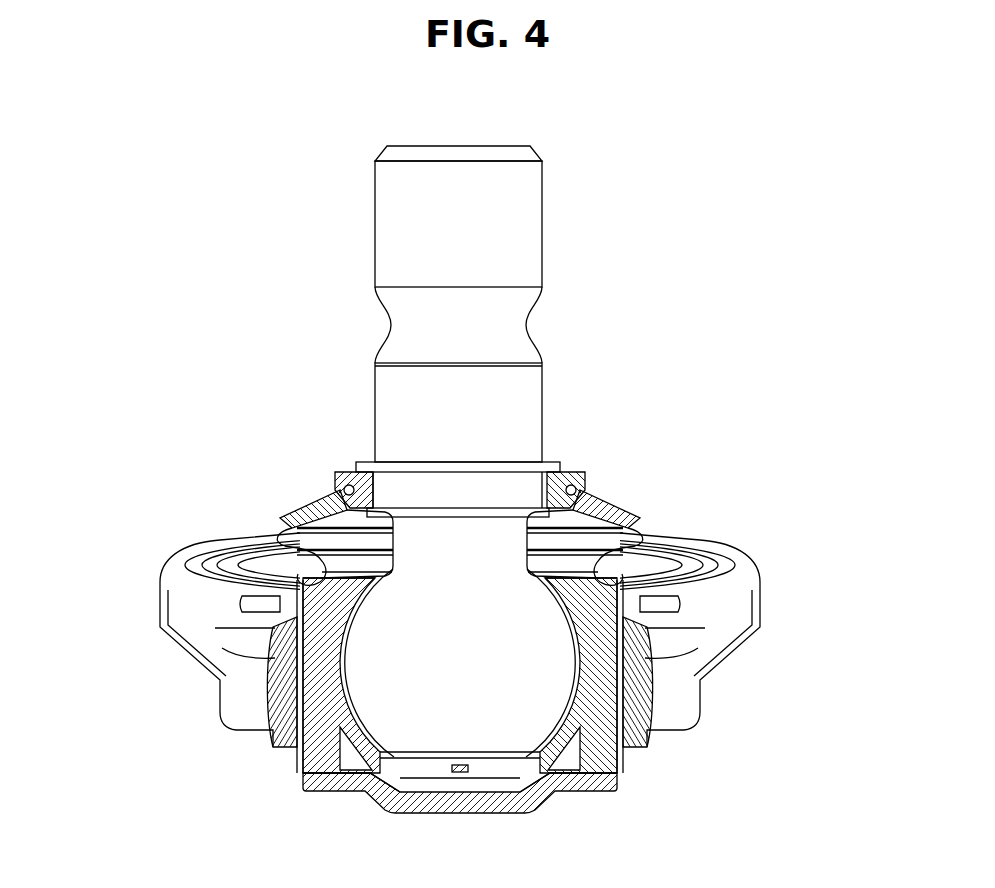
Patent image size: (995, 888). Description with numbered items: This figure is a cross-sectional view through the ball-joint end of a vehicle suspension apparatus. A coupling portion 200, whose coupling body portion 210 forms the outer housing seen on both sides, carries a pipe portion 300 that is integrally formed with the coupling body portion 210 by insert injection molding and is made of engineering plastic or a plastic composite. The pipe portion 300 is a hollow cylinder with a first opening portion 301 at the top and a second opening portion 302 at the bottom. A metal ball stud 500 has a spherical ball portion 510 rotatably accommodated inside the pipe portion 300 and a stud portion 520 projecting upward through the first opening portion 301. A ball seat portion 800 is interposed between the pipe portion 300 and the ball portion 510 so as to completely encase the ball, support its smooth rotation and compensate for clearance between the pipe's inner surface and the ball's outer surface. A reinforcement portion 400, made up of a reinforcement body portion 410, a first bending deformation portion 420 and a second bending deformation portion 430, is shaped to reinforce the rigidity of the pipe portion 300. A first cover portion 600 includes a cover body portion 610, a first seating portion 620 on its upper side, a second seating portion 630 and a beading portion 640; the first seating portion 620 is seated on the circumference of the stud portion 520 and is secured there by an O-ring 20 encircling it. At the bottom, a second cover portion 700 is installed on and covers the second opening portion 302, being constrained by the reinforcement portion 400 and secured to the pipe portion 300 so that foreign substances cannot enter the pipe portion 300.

The O-ring 20 is at (345, 487).
The coupling portion 200 is at (513, 652).
The coupling body portion 210 is at (718, 643).
The pipe portion 300 is at (484, 679).
The first opening portion 301 is at (353, 600).
The second opening portion 302 is at (355, 775).
The reinforcement portion 400 is at (326, 637).
The reinforcement body portion 410 is at (268, 668).
The first bending deformation portion 420 is at (283, 560).
The second bending deformation portion 430 is at (288, 765).
The ball stud 500 is at (452, 488).
The ball portion 510 is at (435, 717).
The stud portion 520 is at (378, 223).
The first cover portion 600 is at (559, 480).
The cover body portion 610 is at (637, 518).
The first seating portion 620 is at (575, 482).
The second seating portion 630 is at (603, 570).
The beading portion 640 is at (650, 555).
The second cover portion 700 is at (505, 813).
The ball seat portion 800 is at (608, 790).